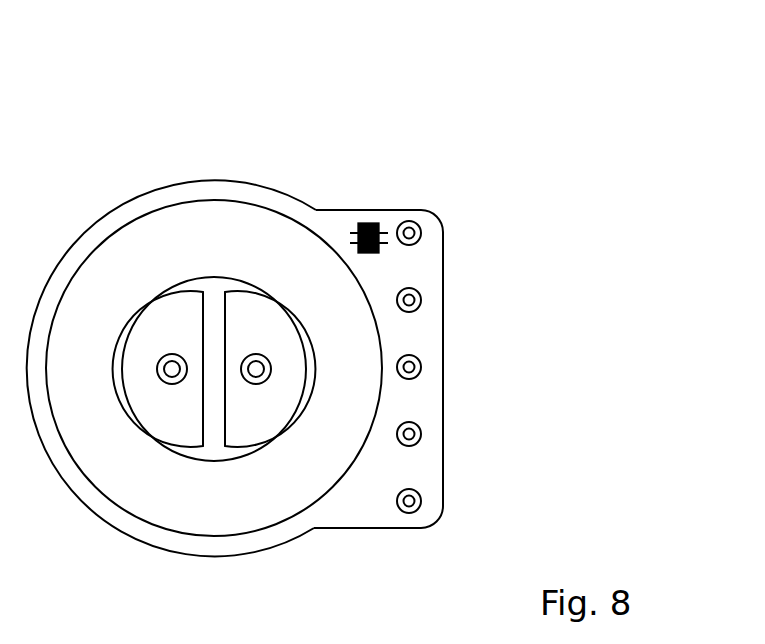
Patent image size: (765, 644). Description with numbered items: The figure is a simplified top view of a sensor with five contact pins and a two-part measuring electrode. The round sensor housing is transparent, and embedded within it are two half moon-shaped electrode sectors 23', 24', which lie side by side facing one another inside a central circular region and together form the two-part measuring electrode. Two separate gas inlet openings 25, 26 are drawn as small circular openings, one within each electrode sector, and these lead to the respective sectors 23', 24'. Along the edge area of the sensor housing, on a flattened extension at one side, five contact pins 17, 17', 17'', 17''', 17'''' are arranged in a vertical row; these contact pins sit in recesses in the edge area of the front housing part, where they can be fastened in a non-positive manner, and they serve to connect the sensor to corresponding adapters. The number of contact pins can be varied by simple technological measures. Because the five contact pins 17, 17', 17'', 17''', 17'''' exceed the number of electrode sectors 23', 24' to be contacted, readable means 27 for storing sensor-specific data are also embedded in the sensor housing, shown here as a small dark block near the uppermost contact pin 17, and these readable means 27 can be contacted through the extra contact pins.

The contact pin 17 is at (510, 235).
The contact pin 17' is at (517, 302).
The contact pin 17'' is at (527, 369).
The contact pin 17''' is at (536, 436).
The contact pin 17'''' is at (546, 503).
The electrode sector 23' is at (145, 236).
The electrode sector 24' is at (292, 236).
The gas inlet opening 25 is at (172, 354).
The gas inlet opening 26 is at (256, 354).
The readable means for storing sensor-specific data 27 is at (370, 223).